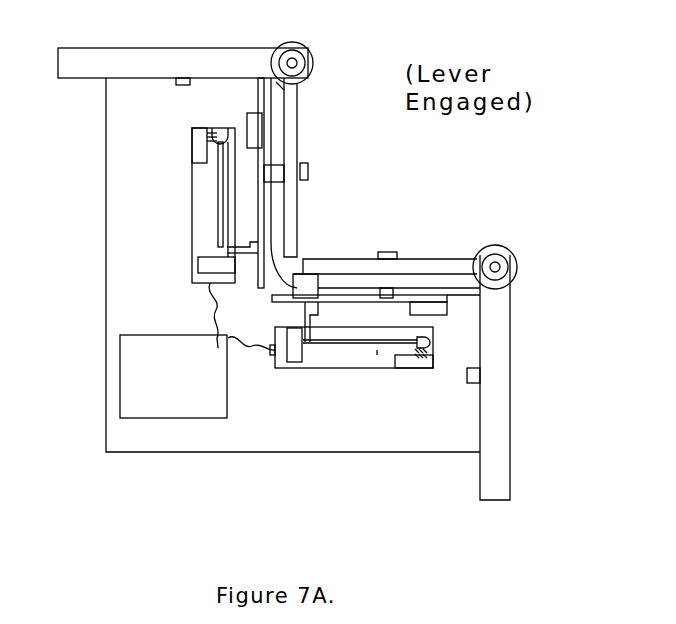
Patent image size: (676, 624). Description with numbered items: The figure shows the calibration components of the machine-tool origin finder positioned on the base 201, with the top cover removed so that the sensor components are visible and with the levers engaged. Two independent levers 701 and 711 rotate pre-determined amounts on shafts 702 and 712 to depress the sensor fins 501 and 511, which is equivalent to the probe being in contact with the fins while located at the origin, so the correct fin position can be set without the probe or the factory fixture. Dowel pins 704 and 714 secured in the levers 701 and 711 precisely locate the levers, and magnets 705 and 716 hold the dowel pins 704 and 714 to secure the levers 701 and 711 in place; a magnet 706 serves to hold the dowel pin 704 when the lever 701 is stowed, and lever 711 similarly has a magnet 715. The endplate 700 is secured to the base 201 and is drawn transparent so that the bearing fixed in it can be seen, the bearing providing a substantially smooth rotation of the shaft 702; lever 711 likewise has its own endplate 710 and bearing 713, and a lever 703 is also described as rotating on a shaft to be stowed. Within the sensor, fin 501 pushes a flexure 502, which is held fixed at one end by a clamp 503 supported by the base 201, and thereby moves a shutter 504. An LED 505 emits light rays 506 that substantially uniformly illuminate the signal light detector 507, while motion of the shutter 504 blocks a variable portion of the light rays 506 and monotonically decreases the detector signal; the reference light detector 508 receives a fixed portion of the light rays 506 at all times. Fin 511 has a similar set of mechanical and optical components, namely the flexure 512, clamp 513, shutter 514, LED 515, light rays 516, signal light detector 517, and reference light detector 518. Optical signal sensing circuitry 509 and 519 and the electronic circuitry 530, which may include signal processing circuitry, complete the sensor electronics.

The base 201 is at (123, 432).
The fin 501 is at (310, 273).
The flexure 502 is at (405, 300).
The clamp 503 is at (437, 306).
The shutter 504 is at (313, 318).
The LED 505 is at (430, 340).
The light rays 506 is at (358, 342).
The signal light detector 507 is at (292, 362).
The reference light detector 508 is at (405, 362).
The optical signal sensing circuitry 509 is at (377, 355).
The fin 511 is at (277, 255).
The flexure 512 is at (260, 192).
The clamp 513 is at (253, 113).
The shutter 514 is at (255, 243).
The LED 515 is at (222, 138).
The light rays 516 is at (217, 211).
The signal light detector 517 is at (208, 265).
The reference light detector 518 is at (203, 150).
The optical signal sensing circuitry 519 is at (208, 188).
The electronic circuitry 530 is at (158, 372).
The endplate 700 is at (490, 400).
The lever 701 is at (418, 267).
The shaft 702 is at (499, 264).
The lever 703 is at (495, 255).
The dowel pin 704 is at (389, 283).
The magnet 705 is at (390, 297).
The magnet 706 is at (477, 373).
The endplate 710 is at (150, 66).
The lever 711 is at (289, 113).
The shaft 712 is at (308, 66).
The bearing 713 is at (293, 60).
The dowel pin 714 is at (285, 165).
The magnet 715 is at (265, 180).
The magnet 716 is at (187, 79).